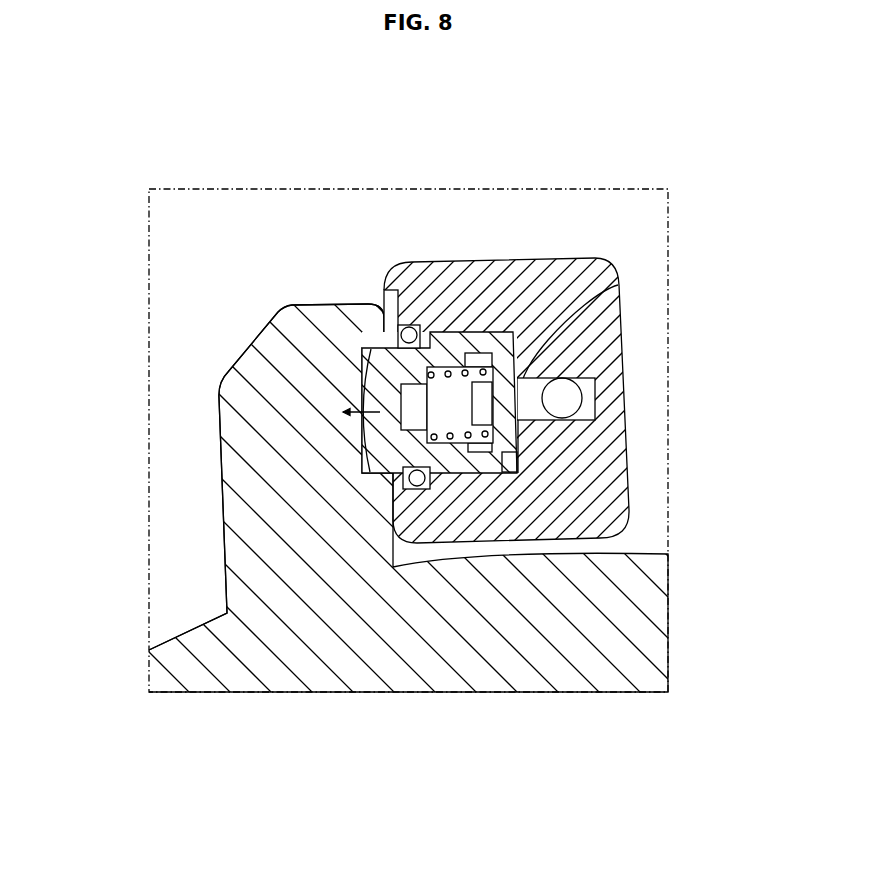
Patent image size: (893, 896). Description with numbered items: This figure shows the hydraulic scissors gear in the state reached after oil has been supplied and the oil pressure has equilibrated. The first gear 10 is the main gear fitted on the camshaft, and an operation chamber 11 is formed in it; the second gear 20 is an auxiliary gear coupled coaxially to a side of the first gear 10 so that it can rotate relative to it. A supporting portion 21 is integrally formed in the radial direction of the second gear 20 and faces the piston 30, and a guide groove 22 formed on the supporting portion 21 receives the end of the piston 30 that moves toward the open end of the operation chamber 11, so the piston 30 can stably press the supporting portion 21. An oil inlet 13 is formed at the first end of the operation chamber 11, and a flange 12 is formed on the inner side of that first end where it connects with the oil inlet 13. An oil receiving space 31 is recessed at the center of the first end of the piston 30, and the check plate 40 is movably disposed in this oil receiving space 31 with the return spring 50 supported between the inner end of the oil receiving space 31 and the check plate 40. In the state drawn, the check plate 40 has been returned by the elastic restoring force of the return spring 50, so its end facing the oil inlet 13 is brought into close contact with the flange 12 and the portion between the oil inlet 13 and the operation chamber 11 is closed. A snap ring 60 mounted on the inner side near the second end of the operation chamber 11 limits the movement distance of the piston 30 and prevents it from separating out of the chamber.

The first gear 10 is at (564, 217).
The operation chamber 11 is at (415, 322).
The flange 12 is at (585, 306).
The oil inlet 13 is at (567, 400).
The second gear 20 is at (578, 648).
The supporting portion 21 is at (280, 380).
The guide groove 22 is at (388, 330).
The piston 30 is at (370, 442).
The oil receiving space 31 is at (362, 399).
The check plate 40 is at (513, 428).
The return spring 50 is at (452, 440).
The snap ring 60 is at (412, 490).